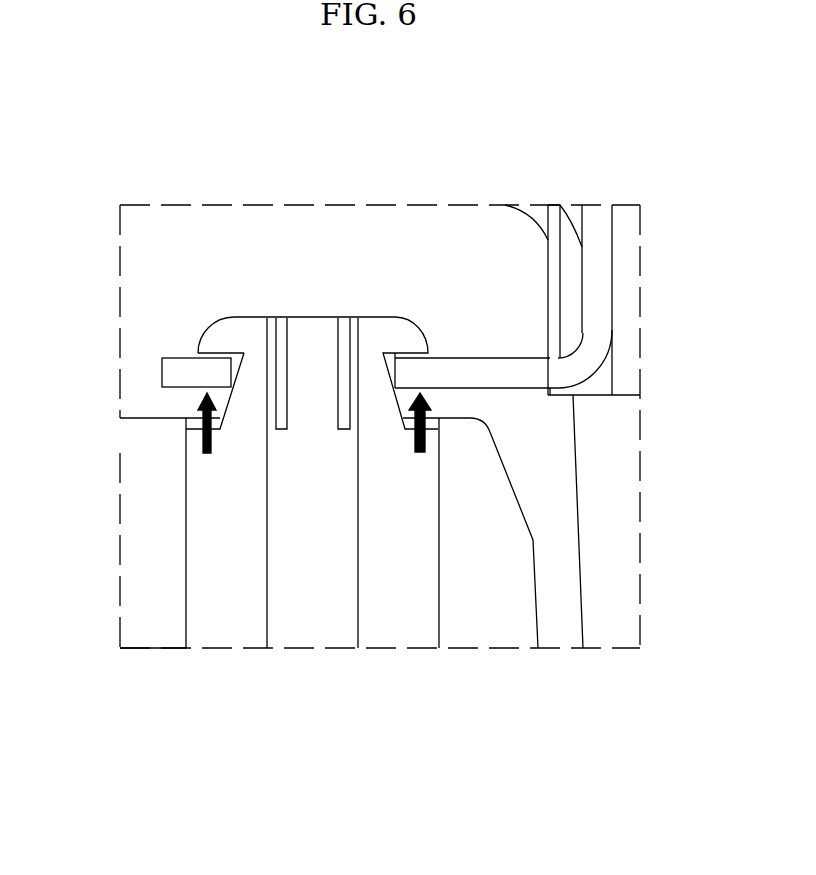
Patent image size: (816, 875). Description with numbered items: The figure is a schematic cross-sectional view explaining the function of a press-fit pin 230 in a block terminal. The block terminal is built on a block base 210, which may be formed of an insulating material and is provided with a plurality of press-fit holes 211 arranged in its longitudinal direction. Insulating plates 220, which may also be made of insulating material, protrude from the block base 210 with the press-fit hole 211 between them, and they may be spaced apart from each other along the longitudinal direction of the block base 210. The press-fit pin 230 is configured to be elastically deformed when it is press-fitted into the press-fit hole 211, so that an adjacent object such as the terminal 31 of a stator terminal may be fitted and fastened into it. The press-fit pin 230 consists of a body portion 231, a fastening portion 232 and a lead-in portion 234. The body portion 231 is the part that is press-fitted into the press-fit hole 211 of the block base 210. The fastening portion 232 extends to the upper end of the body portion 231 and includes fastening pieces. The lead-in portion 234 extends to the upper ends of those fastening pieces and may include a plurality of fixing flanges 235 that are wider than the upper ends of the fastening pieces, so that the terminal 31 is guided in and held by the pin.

The insulating plate 220 is at (348, 257).
The press-fit pin 230 is at (250, 307).
The fixing flange 235 is at (392, 342).
The lead-in portion 234 is at (192, 332).
The fastening portion 232 is at (257, 383).
The body portion 231 is at (233, 592).
The press-fit hole 211 is at (440, 597).
The block base 210 is at (503, 628).
The terminal of stator terminal 31 is at (493, 378).